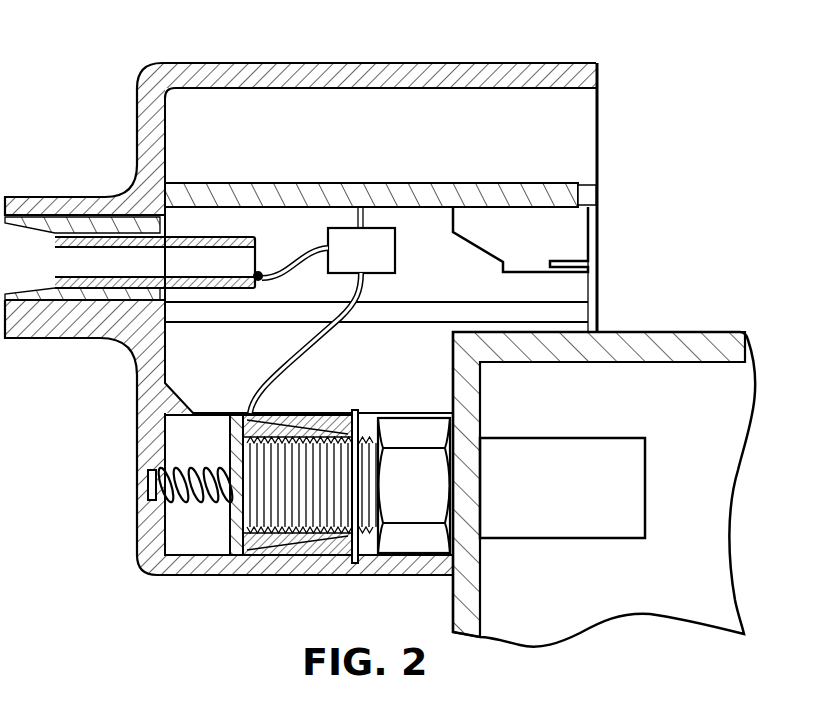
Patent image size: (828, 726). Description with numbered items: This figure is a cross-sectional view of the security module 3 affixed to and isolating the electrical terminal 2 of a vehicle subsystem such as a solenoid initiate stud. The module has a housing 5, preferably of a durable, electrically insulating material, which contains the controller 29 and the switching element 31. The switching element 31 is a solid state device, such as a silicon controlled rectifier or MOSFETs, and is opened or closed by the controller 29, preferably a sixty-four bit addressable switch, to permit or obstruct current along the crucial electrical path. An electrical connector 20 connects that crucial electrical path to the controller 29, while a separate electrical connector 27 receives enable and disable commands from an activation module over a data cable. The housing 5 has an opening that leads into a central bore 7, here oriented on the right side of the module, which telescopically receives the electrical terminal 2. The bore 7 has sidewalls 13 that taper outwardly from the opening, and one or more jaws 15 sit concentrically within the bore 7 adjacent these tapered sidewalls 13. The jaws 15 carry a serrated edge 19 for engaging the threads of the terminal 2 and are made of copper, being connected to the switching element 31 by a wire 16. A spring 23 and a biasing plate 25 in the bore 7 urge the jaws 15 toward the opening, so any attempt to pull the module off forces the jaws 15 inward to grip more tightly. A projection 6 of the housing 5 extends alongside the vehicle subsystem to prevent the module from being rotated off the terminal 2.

The electrical terminal 2 is at (286, 495).
The security module 3 is at (651, 78).
The housing 5 is at (158, 76).
The projection 6 is at (503, 64).
The central bore 7 is at (183, 535).
The tapered sidewalls 13 is at (345, 418).
The jaws 15 is at (278, 416).
The wire 16 is at (300, 255).
The serrated edge 19 is at (327, 401).
The electrical connector 20 is at (55, 270).
The spring 23 is at (148, 490).
The biasing plate 25 is at (230, 448).
The electrical connector 27 is at (480, 256).
The controller 29 is at (428, 183).
The switching element 31 is at (361, 240).